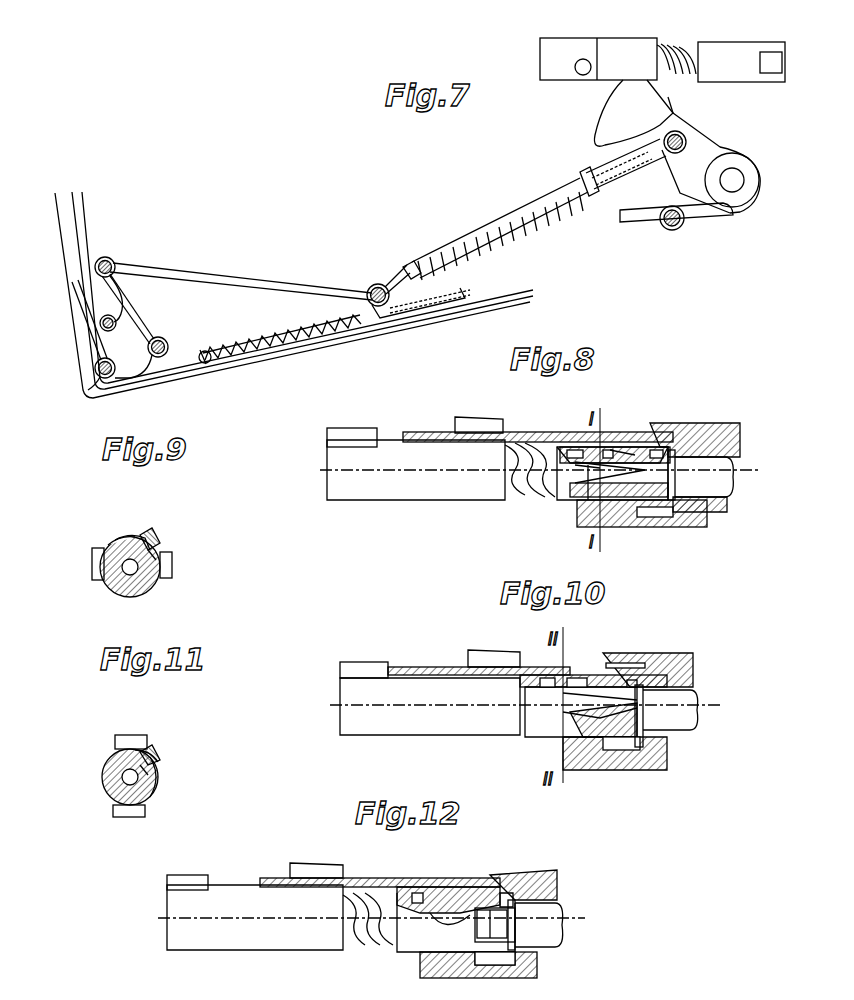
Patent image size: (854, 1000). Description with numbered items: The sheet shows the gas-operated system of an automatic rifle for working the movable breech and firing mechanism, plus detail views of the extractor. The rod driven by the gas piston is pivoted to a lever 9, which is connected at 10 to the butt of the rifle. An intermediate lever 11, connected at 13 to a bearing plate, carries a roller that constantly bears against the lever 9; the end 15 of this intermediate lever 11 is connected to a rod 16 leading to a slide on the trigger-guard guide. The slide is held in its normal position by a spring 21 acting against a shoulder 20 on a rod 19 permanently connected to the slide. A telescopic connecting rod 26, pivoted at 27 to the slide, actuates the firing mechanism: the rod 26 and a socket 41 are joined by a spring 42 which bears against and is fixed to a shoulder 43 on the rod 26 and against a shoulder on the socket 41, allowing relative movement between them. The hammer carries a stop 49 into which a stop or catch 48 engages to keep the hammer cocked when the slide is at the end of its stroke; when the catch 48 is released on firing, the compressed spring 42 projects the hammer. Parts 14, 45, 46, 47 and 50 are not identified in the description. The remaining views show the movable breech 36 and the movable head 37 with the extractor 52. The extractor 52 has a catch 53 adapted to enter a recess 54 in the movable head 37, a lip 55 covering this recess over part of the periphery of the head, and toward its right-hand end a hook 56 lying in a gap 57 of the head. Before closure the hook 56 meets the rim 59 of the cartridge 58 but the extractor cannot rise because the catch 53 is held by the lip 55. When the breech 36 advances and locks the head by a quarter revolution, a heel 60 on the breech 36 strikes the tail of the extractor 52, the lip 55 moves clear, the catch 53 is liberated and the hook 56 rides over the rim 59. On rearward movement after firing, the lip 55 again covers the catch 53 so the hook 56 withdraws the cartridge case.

In FIG. 7, the lever 9 is at (85, 207).
In FIG. 7, the connection to butt 10 is at (115, 366).
In FIG. 7, the intermediate lever 11 is at (128, 315).
In FIG. 7, the connection to bearing plate 13 is at (166, 342).
In FIG. 7, the pivot 14 is at (100, 325).
In FIG. 7, the end of intermediate lever 15 is at (110, 262).
In FIG. 7, the rod 16 is at (200, 278).
In FIG. 7, the rod 19 is at (335, 318).
In FIG. 7, the shoulder 20 is at (207, 352).
In FIG. 7, the spring 21 is at (245, 342).
In FIG. 7, the telescopic connecting rod 26 is at (500, 227).
In FIG. 7, the pivot 27 is at (380, 285).
In FIG. 7, the movable breech 36 is at (630, 50).
In FIG. 8, the movable breech 36 is at (345, 483).
In FIG. 10, the movable breech 36 is at (430, 706).
In FIG. 12, the movable breech 36 is at (255, 917).
In FIG. 7, the movable head 37 is at (720, 52).
In FIG. 8, the movable head 37 is at (570, 495).
In FIG. 9, the movable head 37 is at (158, 580).
In FIG. 11, the movable head 37 is at (122, 777).
In FIG. 10, the movable head 37 is at (596, 728).
In FIG. 12, the movable head 37 is at (425, 940).
In FIG. 7, the socket 41 is at (575, 185).
In FIG. 7, the spring 42 is at (455, 245).
In FIG. 7, the shoulder 43 is at (413, 265).
In FIG. 7, the pivot 45 is at (686, 137).
In FIG. 7, the lever 46 is at (700, 167).
In FIG. 7, the pivot 47 is at (735, 185).
In FIG. 7, the stop or catch 48 is at (700, 213).
In FIG. 7, the stop 49 is at (757, 172).
In FIG. 7, the cam 50 is at (647, 102).
In FIG. 8, the extractor 52 is at (530, 432).
In FIG. 9, the extractor 52 is at (158, 545).
In FIG. 11, the extractor 52 is at (150, 760).
In FIG. 10, the extractor 52 is at (420, 667).
In FIG. 12, the extractor 52 is at (370, 878).
In FIG. 8, the catch 53 is at (605, 440).
In FIG. 9, the catch 53 is at (160, 553).
In FIG. 11, the catch 53 is at (138, 758).
In FIG. 10, the catch 53 is at (565, 675).
In FIG. 12, the catch 53 is at (435, 893).
In FIG. 8, the recess 54 is at (592, 485).
In FIG. 9, the recess 54 is at (112, 553).
In FIG. 11, the recess 54 is at (150, 750).
In FIG. 8, the lip 55 is at (630, 440).
In FIG. 9, the lip 55 is at (128, 540).
In FIG. 11, the lip 55 is at (158, 790).
In FIG. 12, the lip 55 is at (450, 893).
In FIG. 8, the hook 56 is at (705, 440).
In FIG. 10, the hook 56 is at (680, 670).
In FIG. 12, the hook 56 is at (540, 885).
In FIG. 8, the gap 57 is at (650, 440).
In FIG. 12, the gap 57 is at (505, 893).
In FIG. 8, the cartridge 58 is at (715, 480).
In FIG. 10, the cartridge 58 is at (680, 720).
In FIG. 12, the cartridge 58 is at (540, 930).
In FIG. 8, the rim 59 is at (690, 492).
In FIG. 10, the rim 59 is at (643, 700).
In FIG. 12, the rim 59 is at (518, 910).
In FIG. 8, the heel 60 is at (345, 440).
In FIG. 10, the heel 60 is at (355, 670).
In FIG. 12, the heel 60 is at (185, 883).